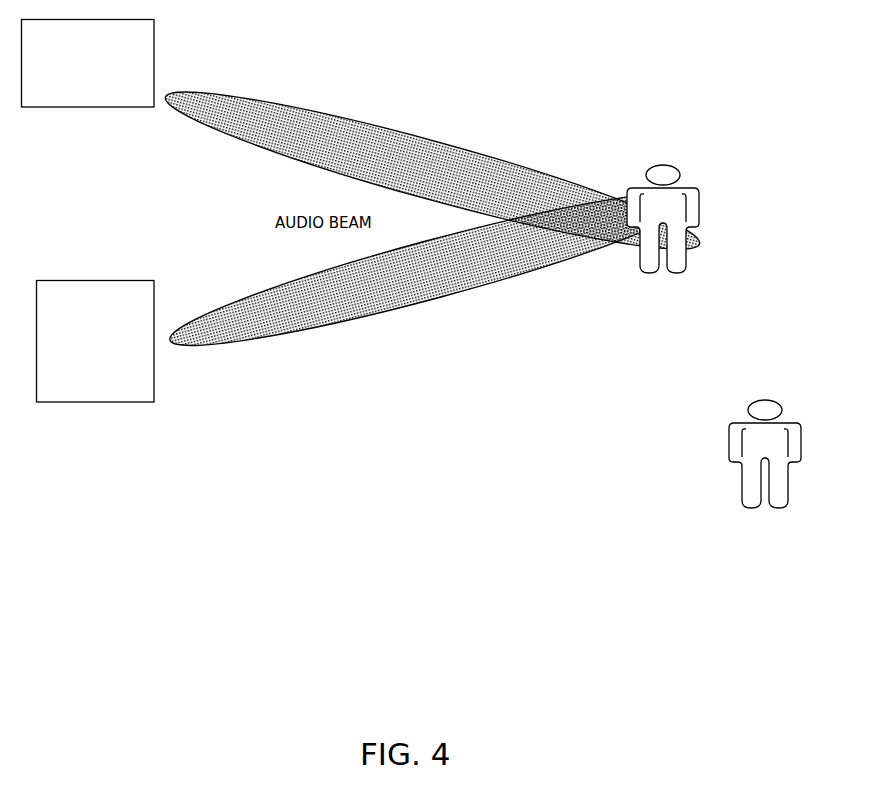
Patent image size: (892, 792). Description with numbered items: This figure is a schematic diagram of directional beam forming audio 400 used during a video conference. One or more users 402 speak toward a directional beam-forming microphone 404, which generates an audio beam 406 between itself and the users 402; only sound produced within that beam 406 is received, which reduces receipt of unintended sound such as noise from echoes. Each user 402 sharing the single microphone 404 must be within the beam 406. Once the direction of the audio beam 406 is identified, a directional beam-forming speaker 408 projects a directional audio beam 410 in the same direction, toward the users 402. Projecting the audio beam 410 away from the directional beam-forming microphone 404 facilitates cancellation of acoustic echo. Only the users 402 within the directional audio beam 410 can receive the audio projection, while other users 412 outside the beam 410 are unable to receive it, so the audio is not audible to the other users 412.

The audio beam environment 400 is at (757, 694).
The users 402 is at (665, 165).
The directional beam-forming microphone 404 is at (100, 108).
The audio beam 406 is at (378, 122).
The directional beam-forming speaker 408 is at (125, 280).
The directional audio beam 410 is at (368, 317).
The other users 412 is at (770, 400).